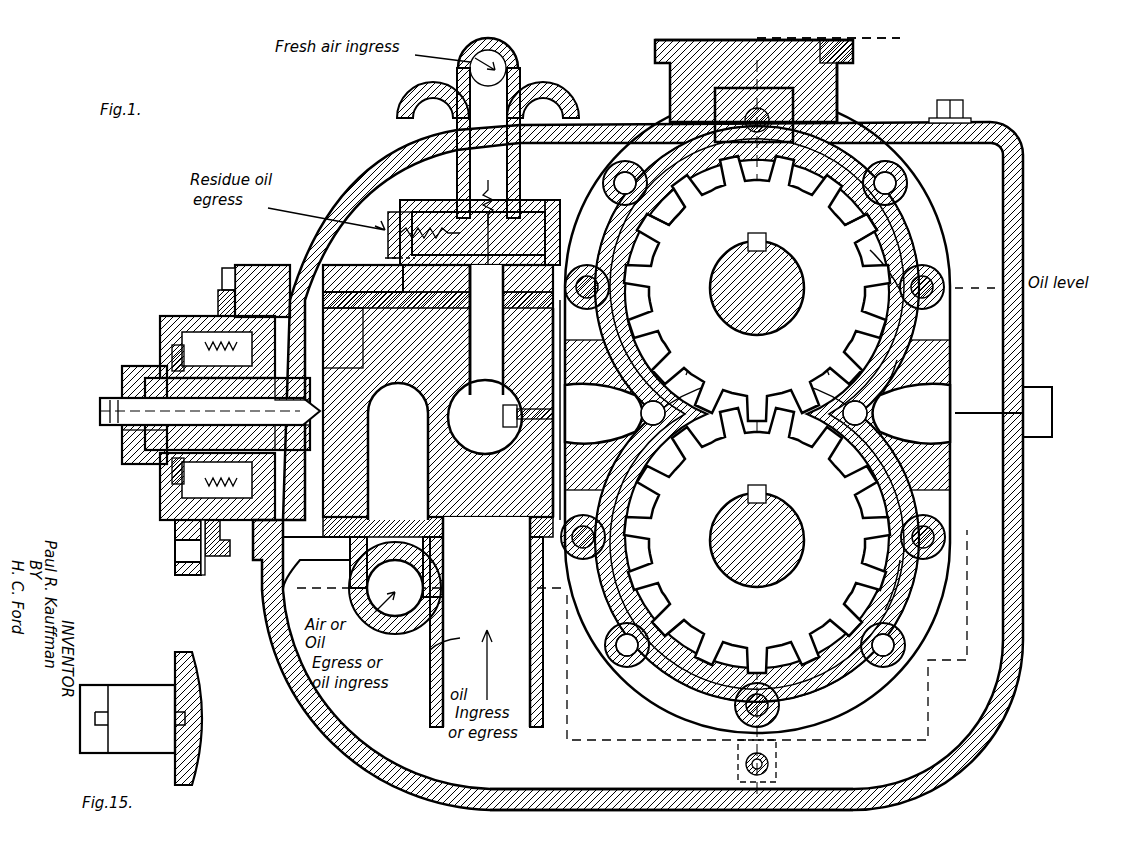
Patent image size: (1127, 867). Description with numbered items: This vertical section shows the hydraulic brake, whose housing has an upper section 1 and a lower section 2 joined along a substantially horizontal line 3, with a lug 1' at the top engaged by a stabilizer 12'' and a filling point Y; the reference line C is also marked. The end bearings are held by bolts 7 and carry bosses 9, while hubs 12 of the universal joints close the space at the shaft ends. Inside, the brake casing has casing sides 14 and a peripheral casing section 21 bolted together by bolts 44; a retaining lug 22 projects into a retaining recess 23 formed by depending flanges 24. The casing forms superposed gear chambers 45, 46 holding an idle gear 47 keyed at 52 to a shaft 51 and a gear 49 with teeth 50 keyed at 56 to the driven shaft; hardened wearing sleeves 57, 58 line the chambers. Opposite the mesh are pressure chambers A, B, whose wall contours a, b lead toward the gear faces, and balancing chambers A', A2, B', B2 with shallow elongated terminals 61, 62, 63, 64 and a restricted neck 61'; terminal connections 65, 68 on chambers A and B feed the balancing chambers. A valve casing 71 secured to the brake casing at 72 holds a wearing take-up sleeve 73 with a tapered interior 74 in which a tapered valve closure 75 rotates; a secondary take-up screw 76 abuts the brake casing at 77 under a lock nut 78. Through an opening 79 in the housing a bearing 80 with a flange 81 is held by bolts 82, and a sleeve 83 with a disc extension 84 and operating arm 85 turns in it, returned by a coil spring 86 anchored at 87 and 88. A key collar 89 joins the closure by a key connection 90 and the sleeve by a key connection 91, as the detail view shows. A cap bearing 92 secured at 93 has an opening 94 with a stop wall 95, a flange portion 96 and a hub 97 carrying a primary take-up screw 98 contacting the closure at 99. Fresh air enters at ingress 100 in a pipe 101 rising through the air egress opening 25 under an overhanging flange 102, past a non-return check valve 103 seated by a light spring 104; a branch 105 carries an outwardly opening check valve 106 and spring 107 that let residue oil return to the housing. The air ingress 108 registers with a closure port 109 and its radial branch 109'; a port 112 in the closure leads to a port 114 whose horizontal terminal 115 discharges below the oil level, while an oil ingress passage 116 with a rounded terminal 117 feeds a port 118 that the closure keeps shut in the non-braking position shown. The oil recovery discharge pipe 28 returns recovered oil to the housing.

In FIG. 1, the upper section 1 is at (638, 466).
In FIG. 1, the lug 1' is at (736, 50).
In FIG. 1, the lower section 2 is at (340, 728).
In FIG. 1, the horizontal line 3 is at (985, 412).
In FIG. 1, the bolts 7 is at (398, 560).
In FIG. 1, the bosses 9 is at (488, 238).
In FIG. 1, the hubs 12 is at (757, 317).
In FIG. 1, the stabilizer 12'' is at (858, 51).
In FIG. 1, the casing sides 14 is at (1003, 592).
In FIG. 1, the peripheral casing section 21 is at (930, 233).
In FIG. 1, the retaining lug 22 is at (714, 125).
In FIG. 1, the retaining recess 23 is at (838, 85).
In FIG. 1, the depending flanges 24 is at (700, 95).
In FIG. 1, the opening 25 is at (410, 128).
In FIG. 1, the discharge pipe 28 is at (770, 765).
In FIG. 1, the bolts 44 is at (935, 283).
In FIG. 1, the gear chamber 45 is at (912, 215).
In FIG. 1, the gear chamber 46 is at (880, 265).
In FIG. 1, the gear 47 is at (900, 340).
In FIG. 1, the gear 49 is at (905, 580).
In FIG. 1, the teeth 50 is at (785, 595).
In FIG. 1, the shaft 51 is at (715, 268).
In FIG. 1, the key 52 is at (750, 236).
In FIG. 1, the key 56 is at (752, 487).
In FIG. 1, the wearing sleeve 57 is at (640, 292).
In FIG. 1, the wearing sleeve 58 is at (748, 605).
In FIG. 1, the elongated terminal 61 is at (837, 222).
In FIG. 1, the restricted neck 61' is at (911, 183).
In FIG. 1, the elongated terminal 62 is at (870, 625).
In FIG. 1, the elongated terminal 63 is at (670, 222).
In FIG. 1, the elongated terminal 64 is at (665, 625).
In FIG. 1, the terminal connection 65 is at (658, 410).
In FIG. 1, the terminal 68 is at (855, 410).
In FIG. 1, the valve casing 71 is at (348, 265).
In FIG. 1, the securing point 72 is at (560, 232).
In FIG. 1, the wearing take-up sleeve 73 is at (324, 298).
In FIG. 1, the tapered interior 74 is at (335, 315).
In FIG. 15, the valve closure 75 is at (205, 690).
In FIG. 1, the screw 76 is at (525, 420).
In FIG. 1, the abutment 77 is at (565, 390).
In FIG. 1, the lock nut 78 is at (565, 440).
In FIG. 1, the opening 79 is at (323, 520).
In FIG. 1, the bearing 80 is at (265, 372).
In FIG. 1, the flange 81 is at (246, 265).
In FIG. 1, the bolts 82 is at (228, 268).
In FIG. 1, the sleeve 83 is at (283, 450).
In FIG. 15, the sleeve 83 is at (93, 745).
In FIG. 1, the disc extension 84 is at (172, 335).
In FIG. 1, the operating arm 85 is at (175, 535).
In FIG. 1, the coil spring 86 is at (215, 335).
In FIG. 1, the anchor 87 is at (258, 345).
In FIG. 1, the anchor 88 is at (162, 500).
In FIG. 1, the key collar 89 is at (300, 378).
In FIG. 15, the key collar 89 is at (138, 690).
In FIG. 15, the key connection 90 is at (175, 720).
In FIG. 15, the key connection 91 is at (108, 718).
In FIG. 1, the cap bearing 92 is at (165, 317).
In FIG. 1, the securing point 93 is at (226, 294).
In FIG. 1, the opening 94 is at (222, 556).
In FIG. 1, the stop wall 95 is at (203, 575).
In FIG. 1, the flange portion 96 is at (155, 347).
In FIG. 1, the hub 97 is at (138, 460).
In FIG. 1, the primary take-up screw 98 is at (122, 432).
In FIG. 1, the contact point 99 is at (310, 400).
In FIG. 1, the fresh air ingress 100 is at (505, 60).
In FIG. 1, the pipe 101 is at (521, 175).
In FIG. 1, the overhanging flange 102 is at (396, 105).
In FIG. 1, the non-return check valve 103 is at (488, 214).
In FIG. 1, the spring 104 is at (490, 180).
In FIG. 1, the branch 105 is at (438, 193).
In FIG. 1, the check valve 106 is at (391, 216).
In FIG. 1, the spring 107 is at (450, 238).
In FIG. 1, the air ingress 108 is at (470, 280).
In FIG. 1, the closure port 109 is at (473, 359).
In FIG. 1, the radial branch 109' is at (449, 330).
In FIG. 1, the port 112 is at (385, 385).
In FIG. 1, the port 114 is at (350, 560).
In FIG. 1, the terminal 115 is at (380, 615).
In FIG. 1, the oil ingress passage 116 is at (430, 665).
In FIG. 1, the terminal 117 is at (432, 728).
In FIG. 1, the port 118 is at (512, 545).
In FIG. 1, the pressure chamber A is at (698, 462).
In FIG. 1, the pressure chamber B is at (912, 414).
In FIG. 1, the chamber wall contour a is at (640, 413).
In FIG. 1, the chamber wall contour b is at (864, 413).
In FIG. 1, the balancing chamber A' is at (905, 172).
In FIG. 1, the balancing chamber B' is at (600, 179).
In FIG. 1, the balancing chamber A2 is at (896, 647).
In FIG. 1, the balancing chamber B2 is at (618, 660).
In FIG. 1, the reference line C is at (833, 35).
In FIG. 1, the filling point Y is at (965, 105).